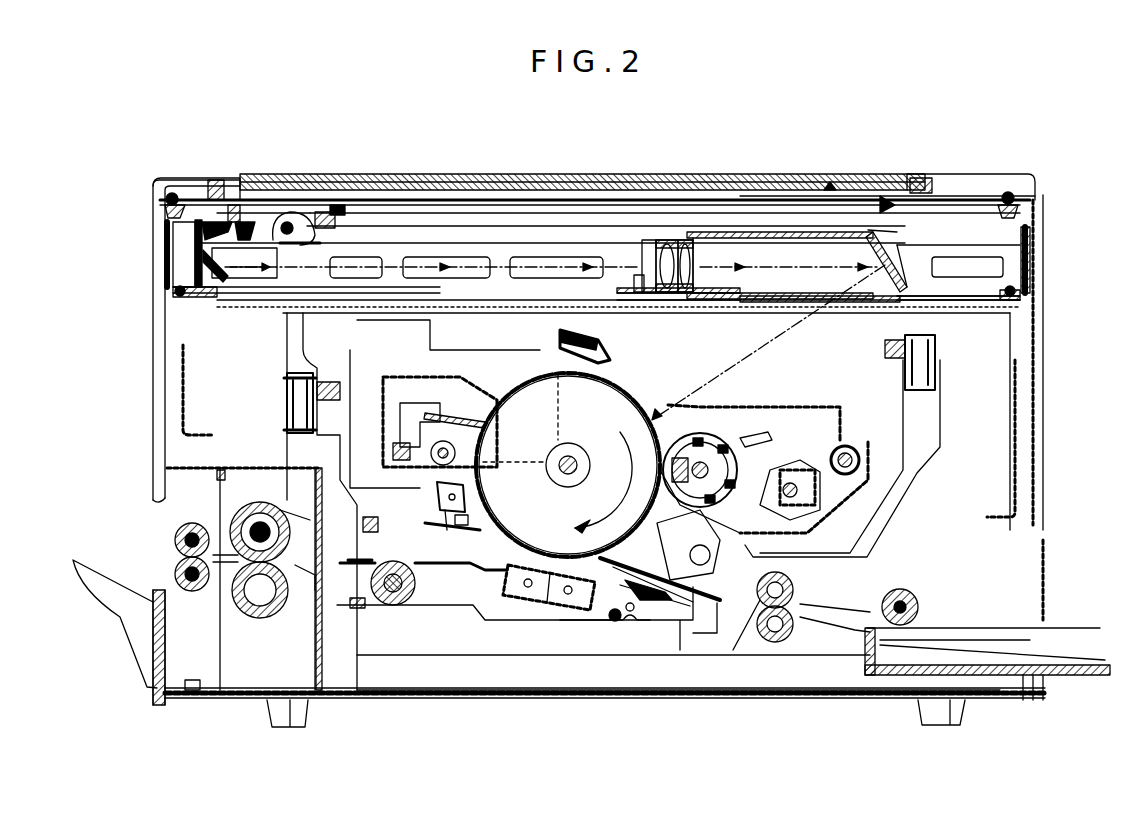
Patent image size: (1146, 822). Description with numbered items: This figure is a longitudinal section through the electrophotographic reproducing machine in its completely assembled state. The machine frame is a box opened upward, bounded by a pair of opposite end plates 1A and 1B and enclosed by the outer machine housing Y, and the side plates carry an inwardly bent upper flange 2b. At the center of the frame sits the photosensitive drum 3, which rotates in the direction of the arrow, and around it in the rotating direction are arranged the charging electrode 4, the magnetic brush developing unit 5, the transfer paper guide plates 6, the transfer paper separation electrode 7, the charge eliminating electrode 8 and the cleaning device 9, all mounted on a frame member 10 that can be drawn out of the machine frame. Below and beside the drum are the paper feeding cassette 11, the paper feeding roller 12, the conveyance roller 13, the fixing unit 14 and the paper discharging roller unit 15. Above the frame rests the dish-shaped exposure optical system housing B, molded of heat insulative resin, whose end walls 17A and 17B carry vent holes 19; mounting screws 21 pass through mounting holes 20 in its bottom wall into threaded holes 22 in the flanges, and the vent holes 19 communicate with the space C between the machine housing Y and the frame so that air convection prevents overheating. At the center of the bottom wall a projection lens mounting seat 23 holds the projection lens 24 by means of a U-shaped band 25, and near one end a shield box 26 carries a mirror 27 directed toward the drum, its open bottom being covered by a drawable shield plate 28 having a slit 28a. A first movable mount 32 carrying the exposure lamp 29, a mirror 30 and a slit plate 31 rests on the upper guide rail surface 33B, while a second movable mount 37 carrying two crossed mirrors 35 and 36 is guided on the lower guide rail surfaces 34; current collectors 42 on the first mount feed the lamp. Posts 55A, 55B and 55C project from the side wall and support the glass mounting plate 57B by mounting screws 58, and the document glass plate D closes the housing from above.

The end plate 1A is at (158, 388).
The end plate 1B is at (1045, 425).
The machine housing Y is at (1048, 470).
The upper flange 2b is at (283, 308).
The photosensitive drum 3 is at (537, 375).
The charging electrode 4 is at (605, 345).
The magnetic brush developing unit 5 is at (783, 407).
The transfer paper guide plates 6 is at (722, 592).
The transfer paper separation electrode 7 is at (578, 602).
The charge eliminating electrode 8 is at (430, 540).
The cleaning device 9 is at (455, 377).
The frame member 10 is at (502, 645).
The paper feeding cassette 11 is at (897, 675).
The paper feeding roller 12 is at (915, 598).
The conveyance roller 13 is at (393, 607).
The fixing unit 14 is at (258, 675).
The paper discharging roller unit 15 is at (197, 677).
The end wall 17A is at (183, 240).
The end wall 17B is at (1028, 240).
The vent holes 19 is at (535, 258).
The mounting holes 20 is at (176, 294).
The mounting screws 21 is at (176, 290).
The threaded holes 22 is at (183, 296).
The projection lens mounting seat 23 is at (640, 276).
The projection lens 24 is at (660, 250).
The band 25 is at (675, 250).
The shield box 26 is at (798, 236).
The mirror 27 is at (892, 260).
The shield plate 28 is at (742, 300).
The slit 28a is at (833, 302).
The exposure lamp 29 is at (288, 226).
The mirror 30 is at (240, 225).
The slit plate 31 is at (232, 215).
The first movable mount 32 is at (320, 223).
The guide rail surface 33B is at (476, 258).
The guide rail surfaces 34 is at (556, 245).
The mirror 35 is at (205, 235).
The mirror 36 is at (210, 280).
The second movable mount 37 is at (215, 262).
The current collectors 42 is at (335, 212).
The post 55A is at (178, 198).
The post 55B is at (612, 205).
The post 55C is at (1012, 200).
The glass mounting plate 57B is at (460, 226).
The mounting screws 58 is at (173, 195).
The exposure optical system housing B is at (738, 215).
The space C is at (168, 268).
The document glass plate D is at (826, 196).